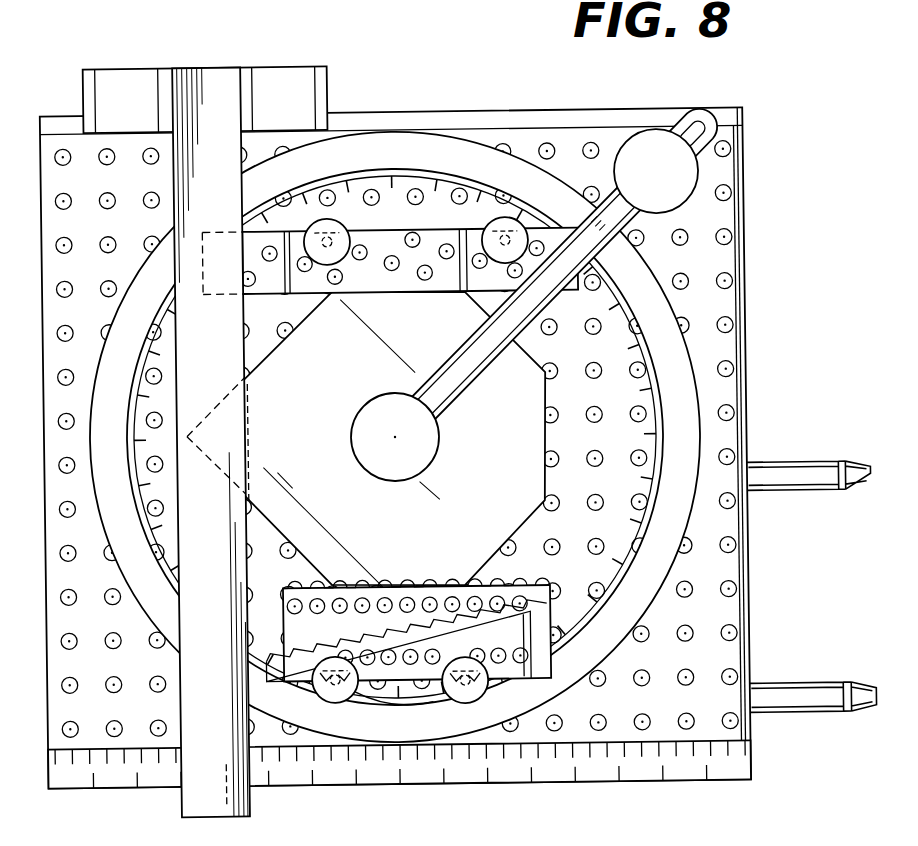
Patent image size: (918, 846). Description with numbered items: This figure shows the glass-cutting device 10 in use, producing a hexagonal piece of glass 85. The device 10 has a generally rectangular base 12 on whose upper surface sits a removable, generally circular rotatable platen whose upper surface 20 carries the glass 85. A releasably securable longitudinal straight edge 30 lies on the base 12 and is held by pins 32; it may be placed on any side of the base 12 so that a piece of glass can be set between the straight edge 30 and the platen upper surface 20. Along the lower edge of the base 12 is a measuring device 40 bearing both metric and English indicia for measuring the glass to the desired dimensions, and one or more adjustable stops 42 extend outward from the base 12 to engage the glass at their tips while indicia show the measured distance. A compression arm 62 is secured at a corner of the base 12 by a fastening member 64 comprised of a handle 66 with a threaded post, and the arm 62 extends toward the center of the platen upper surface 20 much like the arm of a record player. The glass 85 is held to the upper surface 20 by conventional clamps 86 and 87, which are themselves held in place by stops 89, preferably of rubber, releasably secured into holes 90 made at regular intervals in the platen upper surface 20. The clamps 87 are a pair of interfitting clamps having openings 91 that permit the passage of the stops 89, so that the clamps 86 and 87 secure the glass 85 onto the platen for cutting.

The device 10 is at (459, 421).
The base 12 is at (441, 470).
The upper surface of the platen 20 is at (748, 597).
The longitudinal straight edge 30 is at (226, 562).
The pins 32 is at (305, 71).
The measuring device 40 is at (418, 768).
The adjustable stops 42 is at (811, 465).
The compression arm 62 is at (491, 353).
The fastening member 64 is at (665, 92).
The handle 66 is at (423, 435).
The hexagonal piece of glass 85 is at (315, 453).
The clamp 86 is at (445, 291).
The clamps 87 is at (511, 618).
The stops 89 is at (483, 233).
The holes 90 is at (726, 550).
The openings 91 is at (337, 276).